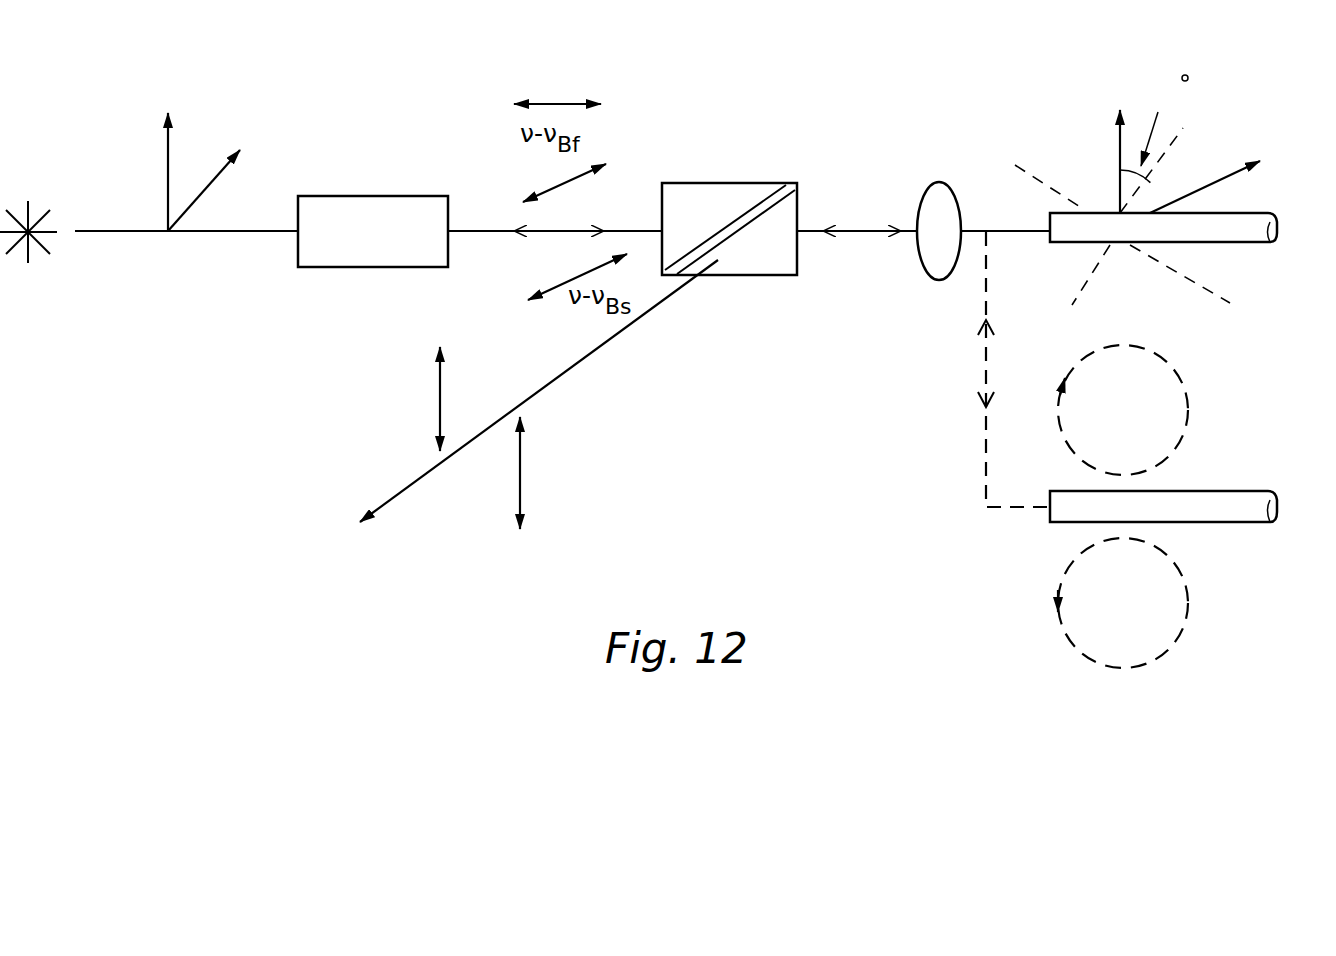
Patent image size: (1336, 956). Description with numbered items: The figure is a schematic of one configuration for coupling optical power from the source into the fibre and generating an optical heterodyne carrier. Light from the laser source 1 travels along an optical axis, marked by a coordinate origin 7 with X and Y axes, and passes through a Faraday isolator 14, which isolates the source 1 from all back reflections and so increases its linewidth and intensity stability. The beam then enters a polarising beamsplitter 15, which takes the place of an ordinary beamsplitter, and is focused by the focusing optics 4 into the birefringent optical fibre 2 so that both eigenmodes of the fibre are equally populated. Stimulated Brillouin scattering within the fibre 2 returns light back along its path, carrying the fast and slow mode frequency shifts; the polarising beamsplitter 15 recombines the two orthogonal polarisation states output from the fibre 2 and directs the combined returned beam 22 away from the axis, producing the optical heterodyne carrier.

The laser source 1 is at (32, 203).
The beam point / coordinate origin 7 is at (164, 238).
The Faraday isolator 14 is at (363, 194).
The polarising beamsplitter 15 is at (720, 181).
The focusing optics 4 is at (938, 180).
The birefringent optical fibre 2 is at (1250, 246).
The returned beam 22 is at (445, 468).